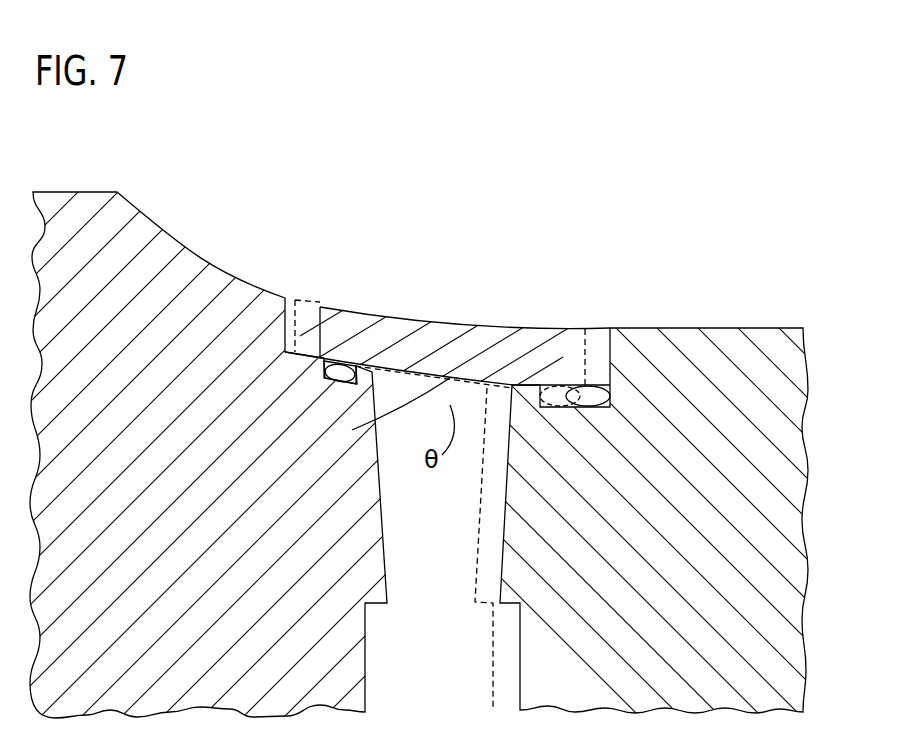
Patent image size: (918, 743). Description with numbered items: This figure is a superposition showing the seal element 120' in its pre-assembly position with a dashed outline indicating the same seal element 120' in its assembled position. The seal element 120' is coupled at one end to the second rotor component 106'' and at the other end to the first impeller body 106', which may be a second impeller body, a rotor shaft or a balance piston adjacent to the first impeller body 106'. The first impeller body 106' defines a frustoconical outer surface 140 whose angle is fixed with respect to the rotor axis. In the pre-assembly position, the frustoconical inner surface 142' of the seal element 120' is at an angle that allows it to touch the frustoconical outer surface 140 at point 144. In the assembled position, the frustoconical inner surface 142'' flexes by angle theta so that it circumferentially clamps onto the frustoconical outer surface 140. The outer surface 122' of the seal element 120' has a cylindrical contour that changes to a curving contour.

The first impeller body 106' is at (448, 426).
The second rotor component 106'' is at (580, 485).
The seal element 120' is at (447, 316).
The frustoconical outer surface 140 is at (302, 345).
The point 144 is at (323, 360).
The outer surface 122' is at (570, 328).
The frustoconical inner surface 142' is at (436, 317).
The frustoconical inner surface 142'' is at (383, 413).